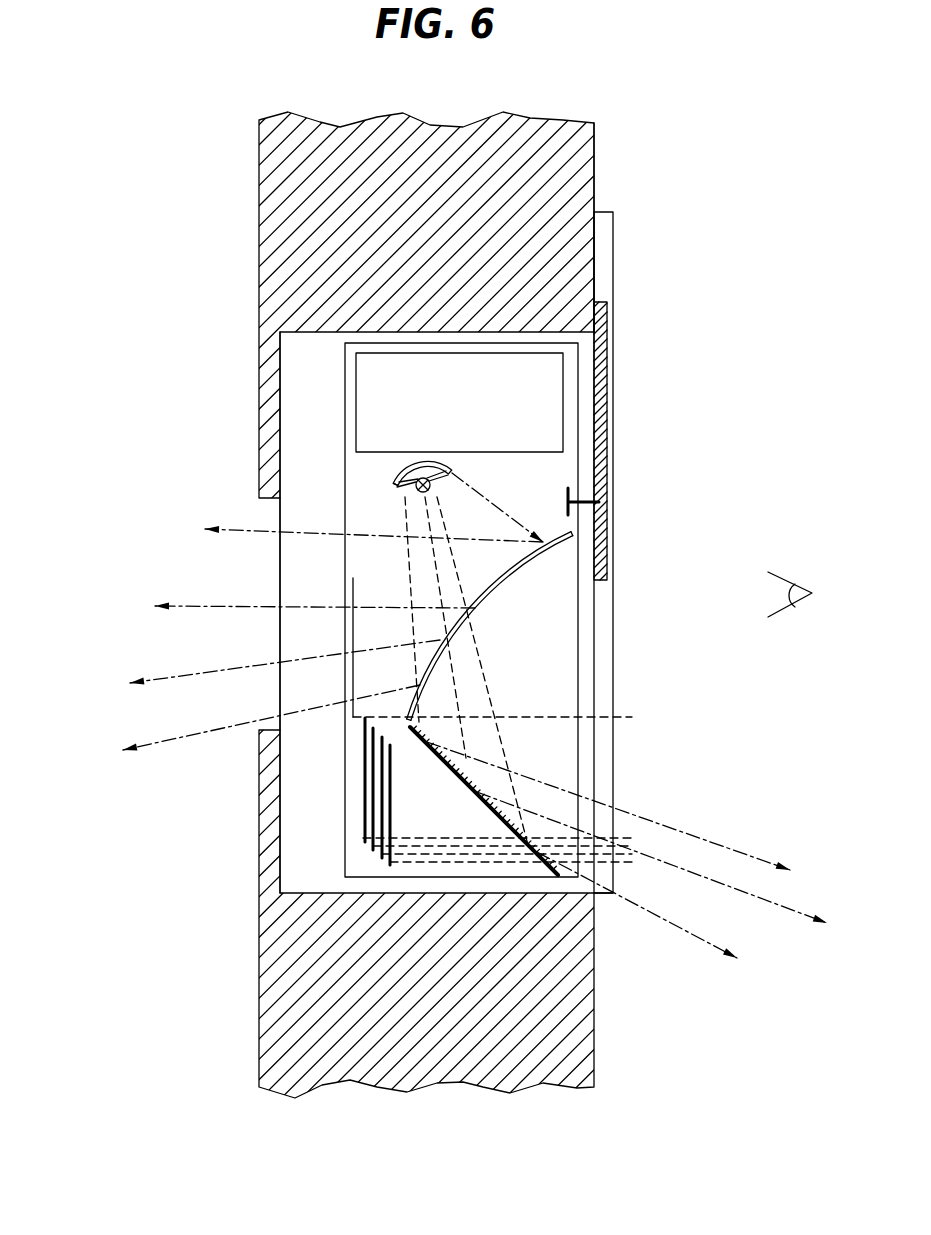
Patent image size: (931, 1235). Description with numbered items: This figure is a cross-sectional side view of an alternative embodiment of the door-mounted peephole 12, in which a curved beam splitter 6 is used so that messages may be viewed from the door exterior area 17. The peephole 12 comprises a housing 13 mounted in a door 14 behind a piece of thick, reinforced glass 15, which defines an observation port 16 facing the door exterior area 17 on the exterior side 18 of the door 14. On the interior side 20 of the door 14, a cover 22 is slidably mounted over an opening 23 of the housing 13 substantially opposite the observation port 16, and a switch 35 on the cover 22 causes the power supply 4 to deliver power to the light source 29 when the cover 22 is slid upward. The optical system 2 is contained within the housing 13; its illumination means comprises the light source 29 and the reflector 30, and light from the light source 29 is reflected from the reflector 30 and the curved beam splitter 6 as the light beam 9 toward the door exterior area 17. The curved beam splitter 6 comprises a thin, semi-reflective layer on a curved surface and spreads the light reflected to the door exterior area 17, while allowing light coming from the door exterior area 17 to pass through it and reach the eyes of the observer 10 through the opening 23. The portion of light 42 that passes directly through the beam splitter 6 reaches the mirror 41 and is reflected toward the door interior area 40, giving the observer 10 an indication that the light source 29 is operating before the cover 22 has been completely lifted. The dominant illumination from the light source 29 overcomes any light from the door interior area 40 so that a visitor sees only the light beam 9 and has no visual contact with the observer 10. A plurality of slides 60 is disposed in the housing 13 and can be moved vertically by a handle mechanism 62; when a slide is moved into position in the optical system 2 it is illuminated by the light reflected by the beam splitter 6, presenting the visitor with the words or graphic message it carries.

The optical system 2 is at (372, 632).
The power supply 4 is at (552, 387).
The beam splitter 6 is at (530, 565).
The light beam 9 is at (213, 605).
The observer 10 is at (807, 594).
The peephole 12 is at (708, 313).
The housing 13 is at (553, 343).
The door 14 is at (585, 206).
The glass 15 is at (317, 405).
The observation port 16 is at (265, 517).
The door exterior area 17 is at (37, 502).
The exterior side 18 is at (259, 162).
The interior side 20 is at (594, 162).
The cover 22 is at (601, 473).
The opening 23 is at (630, 687).
The light source 29 is at (413, 492).
The reflector 30 is at (452, 472).
The switch 35 is at (604, 521).
The door interior area 40 is at (850, 462).
The mirror 41 is at (483, 813).
The light 42 is at (700, 838).
The slides 60 is at (363, 790).
The handle mechanism 62 is at (618, 718).